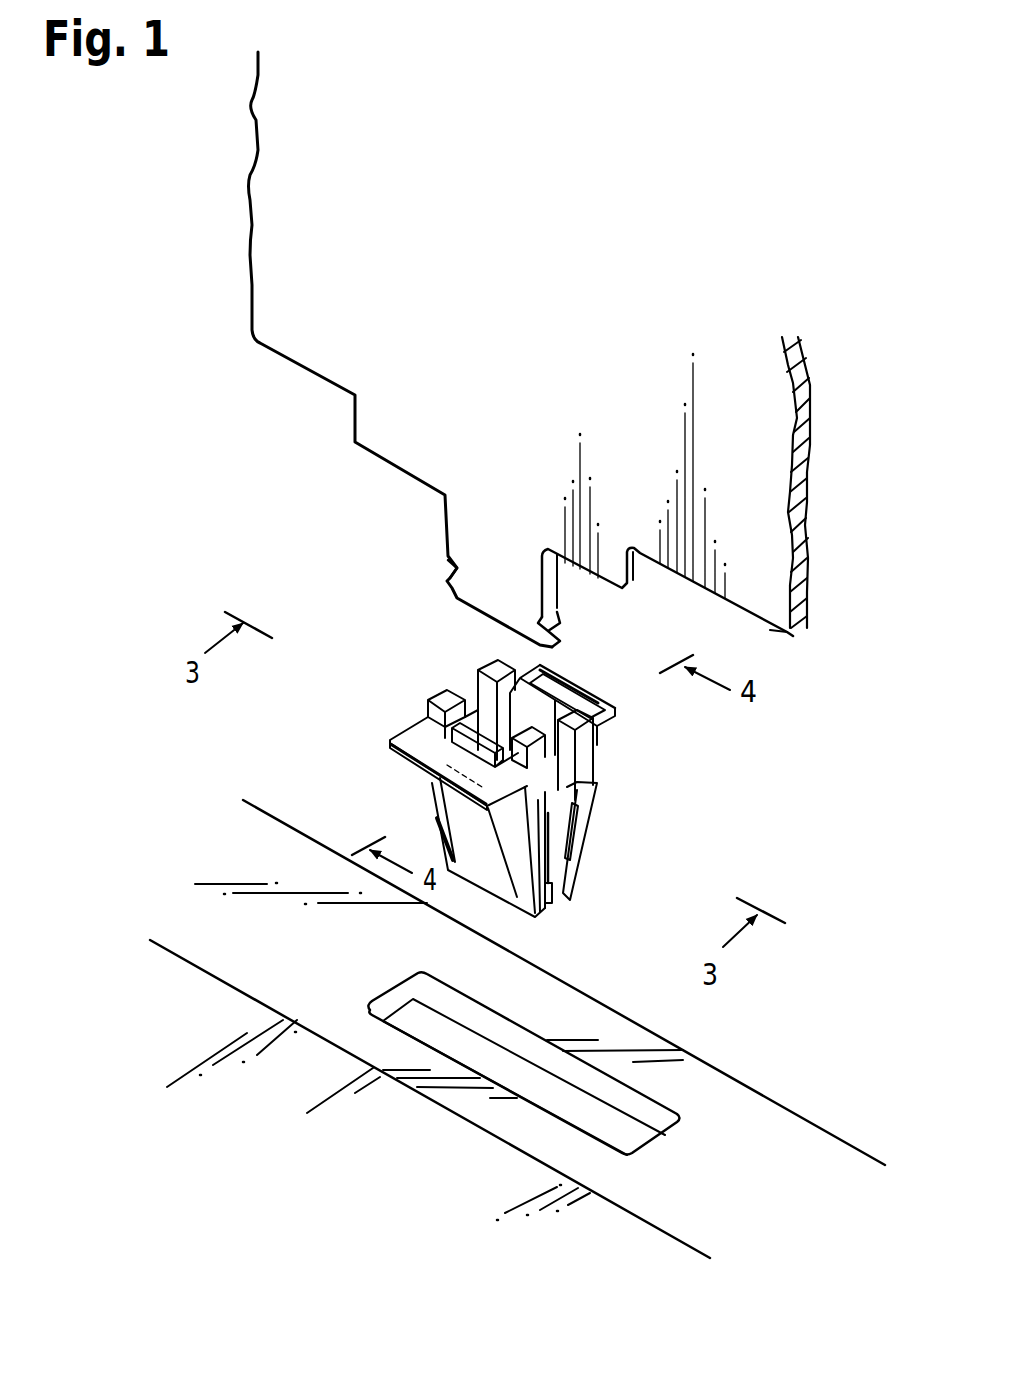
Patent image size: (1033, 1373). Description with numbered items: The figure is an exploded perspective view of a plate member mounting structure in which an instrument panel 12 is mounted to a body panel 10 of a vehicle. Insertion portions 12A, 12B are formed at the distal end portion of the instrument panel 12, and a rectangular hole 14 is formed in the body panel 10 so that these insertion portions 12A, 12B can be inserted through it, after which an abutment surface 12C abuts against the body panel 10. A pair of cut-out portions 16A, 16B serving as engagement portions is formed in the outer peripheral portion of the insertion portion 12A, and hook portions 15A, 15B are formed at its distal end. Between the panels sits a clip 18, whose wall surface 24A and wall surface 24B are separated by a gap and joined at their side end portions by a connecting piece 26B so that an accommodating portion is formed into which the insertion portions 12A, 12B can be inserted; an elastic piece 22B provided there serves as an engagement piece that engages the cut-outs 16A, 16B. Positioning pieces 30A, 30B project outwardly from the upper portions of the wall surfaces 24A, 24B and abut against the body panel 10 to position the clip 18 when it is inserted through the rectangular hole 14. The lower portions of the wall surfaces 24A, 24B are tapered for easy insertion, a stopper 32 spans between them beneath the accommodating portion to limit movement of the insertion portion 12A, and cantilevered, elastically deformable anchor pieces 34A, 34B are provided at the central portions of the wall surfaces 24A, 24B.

The body panel 10 is at (768, 1098).
The instrument panel 12 is at (815, 435).
The insertion portion 12A is at (560, 565).
The insertion portion 12B is at (630, 563).
The abutment surface 12C is at (763, 623).
The rectangular hole 14 is at (523, 1043).
The hook portion 15A is at (448, 592).
The hook portion 15B is at (552, 647).
The cut-out portion 16A is at (447, 567).
The cut-out portion 16B is at (563, 622).
The clip 18 is at (549, 813).
The elastic piece 22B is at (570, 853).
The wall surface 24A is at (533, 837).
The wall surface 24B is at (580, 817).
The connecting piece 26B is at (593, 788).
The positioning piece 30A is at (420, 722).
The positioning piece 30B is at (630, 723).
The stopper 32 is at (548, 900).
The anchor piece 34A is at (462, 803).
The anchor piece 34B is at (580, 763).